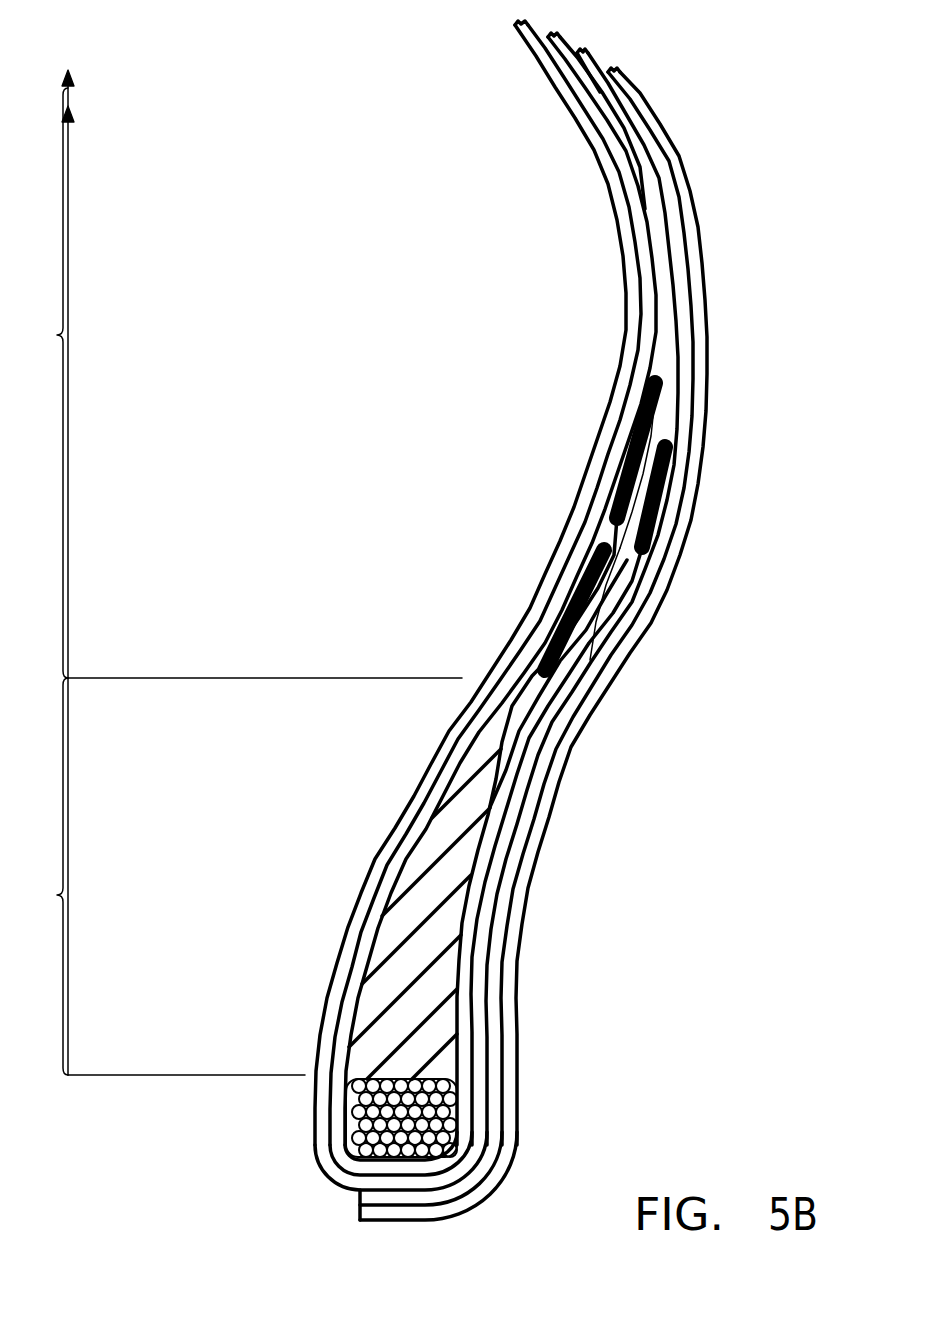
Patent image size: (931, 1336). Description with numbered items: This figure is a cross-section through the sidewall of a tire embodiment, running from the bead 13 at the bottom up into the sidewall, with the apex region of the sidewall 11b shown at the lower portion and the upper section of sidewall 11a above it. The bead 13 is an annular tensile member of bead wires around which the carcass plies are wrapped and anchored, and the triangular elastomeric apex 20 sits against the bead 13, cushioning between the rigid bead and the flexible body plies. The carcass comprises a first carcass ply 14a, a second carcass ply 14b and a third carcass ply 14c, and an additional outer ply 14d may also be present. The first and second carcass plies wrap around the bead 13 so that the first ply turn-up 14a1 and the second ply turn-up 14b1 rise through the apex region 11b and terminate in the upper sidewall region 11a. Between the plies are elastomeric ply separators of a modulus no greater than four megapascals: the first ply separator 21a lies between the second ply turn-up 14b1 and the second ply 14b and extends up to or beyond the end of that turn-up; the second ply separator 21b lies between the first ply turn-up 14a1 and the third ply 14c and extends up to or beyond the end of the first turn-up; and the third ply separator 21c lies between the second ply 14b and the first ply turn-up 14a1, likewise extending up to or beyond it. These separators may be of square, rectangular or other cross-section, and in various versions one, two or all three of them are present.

The upper section of sidewall 11a is at (241, 374).
The apex region of the sidewall 11b is at (162, 876).
The bead 13 is at (377, 1137).
The first carcass ply 14a is at (573, 100).
The second carcass ply 14b is at (617, 157).
The third carcass ply 14c is at (653, 203).
The additional outer ply 14d is at (637, 128).
The first ply turn-up 14a1 is at (650, 460).
The second ply turn-up 14b1 is at (590, 618).
The apex 20 is at (393, 930).
The first ply separator 21a is at (550, 643).
The second ply separator 21b is at (670, 494).
The third ply separator 21c is at (618, 447).